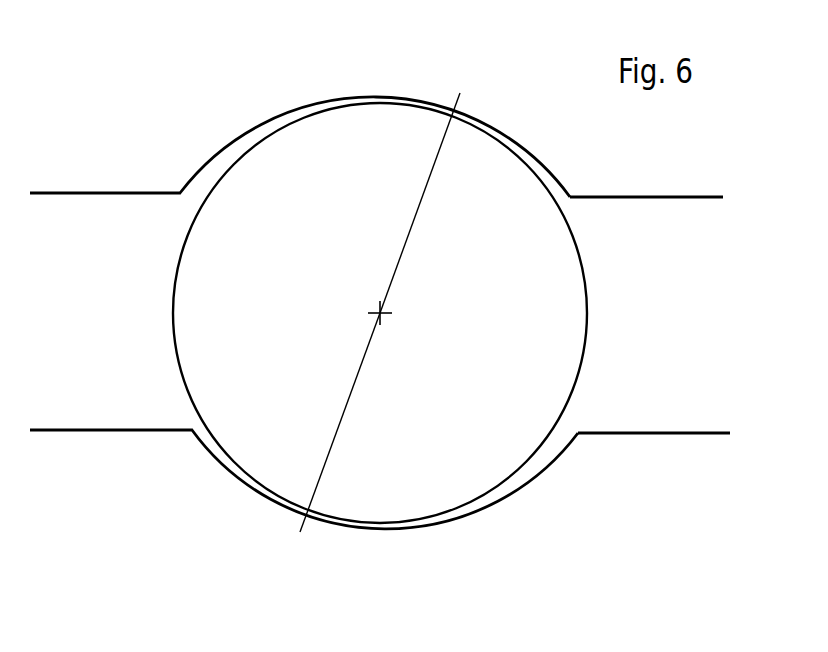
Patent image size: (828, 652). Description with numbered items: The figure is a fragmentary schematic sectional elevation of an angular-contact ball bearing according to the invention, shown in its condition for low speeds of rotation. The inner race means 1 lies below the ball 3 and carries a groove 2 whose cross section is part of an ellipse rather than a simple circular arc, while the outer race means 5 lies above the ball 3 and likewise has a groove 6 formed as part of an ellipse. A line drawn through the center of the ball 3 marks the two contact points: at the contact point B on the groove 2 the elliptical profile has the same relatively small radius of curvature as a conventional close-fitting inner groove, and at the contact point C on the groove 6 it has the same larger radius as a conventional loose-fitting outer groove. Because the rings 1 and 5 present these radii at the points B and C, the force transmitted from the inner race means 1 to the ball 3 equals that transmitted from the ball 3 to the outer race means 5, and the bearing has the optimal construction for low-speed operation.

The inner race means 1 is at (658, 433).
The groove 2 is at (518, 483).
The ball 3 is at (587, 320).
The outer race means 5 is at (663, 198).
The groove 6 is at (245, 133).
The contact point B is at (310, 517).
The contact point C is at (453, 112).